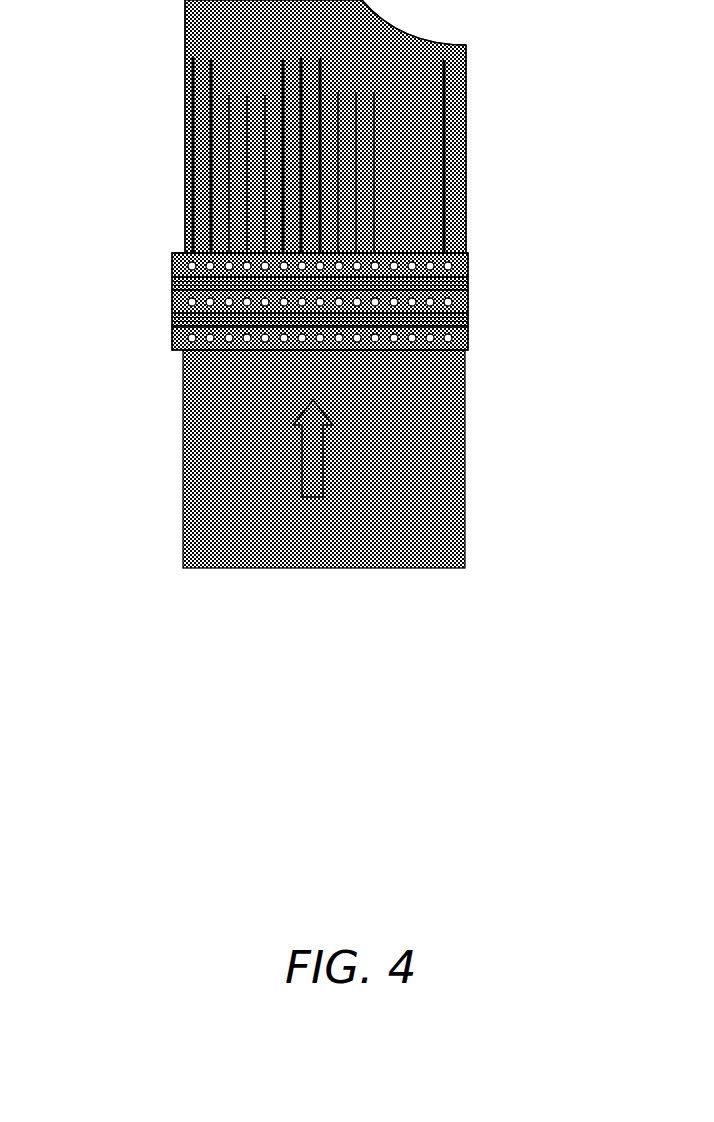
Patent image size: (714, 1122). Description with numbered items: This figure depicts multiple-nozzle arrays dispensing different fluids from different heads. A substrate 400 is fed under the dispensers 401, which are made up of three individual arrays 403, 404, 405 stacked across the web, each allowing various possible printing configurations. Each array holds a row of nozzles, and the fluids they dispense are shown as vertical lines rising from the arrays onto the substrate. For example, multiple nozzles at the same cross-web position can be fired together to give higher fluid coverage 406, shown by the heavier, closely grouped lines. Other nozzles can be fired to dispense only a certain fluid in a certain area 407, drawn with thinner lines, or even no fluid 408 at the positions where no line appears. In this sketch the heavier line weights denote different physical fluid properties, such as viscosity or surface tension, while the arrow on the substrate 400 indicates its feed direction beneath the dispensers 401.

The substrate 400 is at (464, 435).
The dispensers 401 is at (466, 270).
The individual array 403 is at (172, 343).
The individual array 404 is at (166, 302).
The individual array 405 is at (165, 267).
The higher fluid coverage 406 is at (453, 195).
The certain fluid in a certain area 407 is at (373, 204).
The no fluid 408 is at (183, 252).